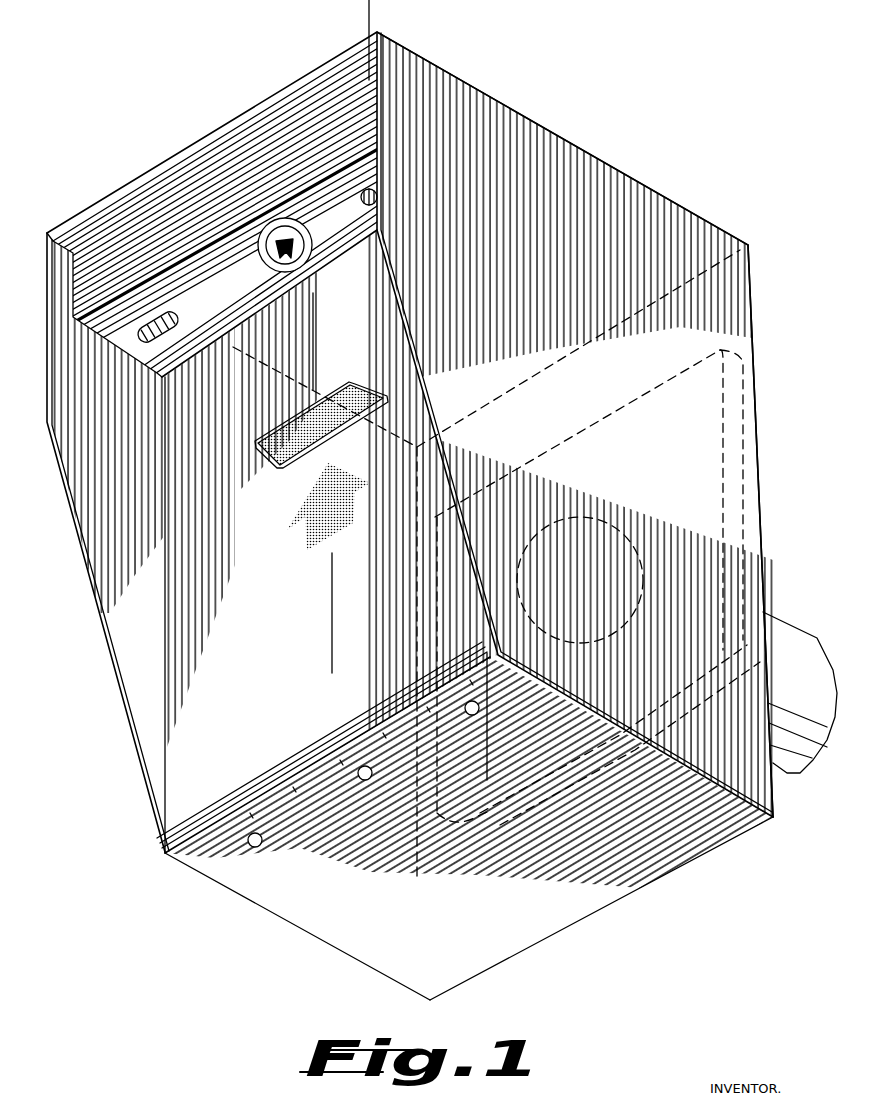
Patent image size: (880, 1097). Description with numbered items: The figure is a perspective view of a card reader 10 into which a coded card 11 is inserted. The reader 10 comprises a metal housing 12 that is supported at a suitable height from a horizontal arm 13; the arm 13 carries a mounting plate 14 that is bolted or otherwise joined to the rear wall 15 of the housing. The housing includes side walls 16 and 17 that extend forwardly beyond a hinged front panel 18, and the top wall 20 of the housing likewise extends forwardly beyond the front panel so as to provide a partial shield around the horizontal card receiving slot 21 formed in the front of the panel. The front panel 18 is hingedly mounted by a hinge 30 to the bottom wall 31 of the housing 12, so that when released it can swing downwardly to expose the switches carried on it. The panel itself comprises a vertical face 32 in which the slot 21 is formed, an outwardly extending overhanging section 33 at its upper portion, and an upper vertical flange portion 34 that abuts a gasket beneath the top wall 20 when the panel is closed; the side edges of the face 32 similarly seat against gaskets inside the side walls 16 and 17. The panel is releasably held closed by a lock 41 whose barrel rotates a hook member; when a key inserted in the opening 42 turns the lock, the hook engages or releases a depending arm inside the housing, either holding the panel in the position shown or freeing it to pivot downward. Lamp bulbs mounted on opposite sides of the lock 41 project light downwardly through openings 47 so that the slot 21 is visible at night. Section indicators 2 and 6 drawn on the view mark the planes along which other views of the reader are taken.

The reader 10 is at (558, 80).
The card 11 is at (320, 405).
The metal housing 12 is at (584, 190).
The horizontal arm 13 is at (780, 652).
The mounting plate 14 is at (732, 387).
The rear wall 15 is at (757, 295).
The side wall 16 is at (202, 893).
The side wall 17 is at (650, 237).
The hinged front panel 18 is at (331, 541).
The top wall 20 is at (133, 176).
The card receiving slot 21 is at (378, 395).
The hinge 30 is at (303, 782).
The bottom wall 31 is at (540, 905).
The vertical face 32 is at (195, 782).
The overhanging section 33 is at (332, 194).
The upper vertical flange portion 34 is at (320, 118).
The lock 41 is at (312, 247).
The opening 42 is at (296, 230).
The openings 47 is at (140, 330).
The section line 2- 2 is at (400, 0).
The section line 6- 6 is at (352, 290).